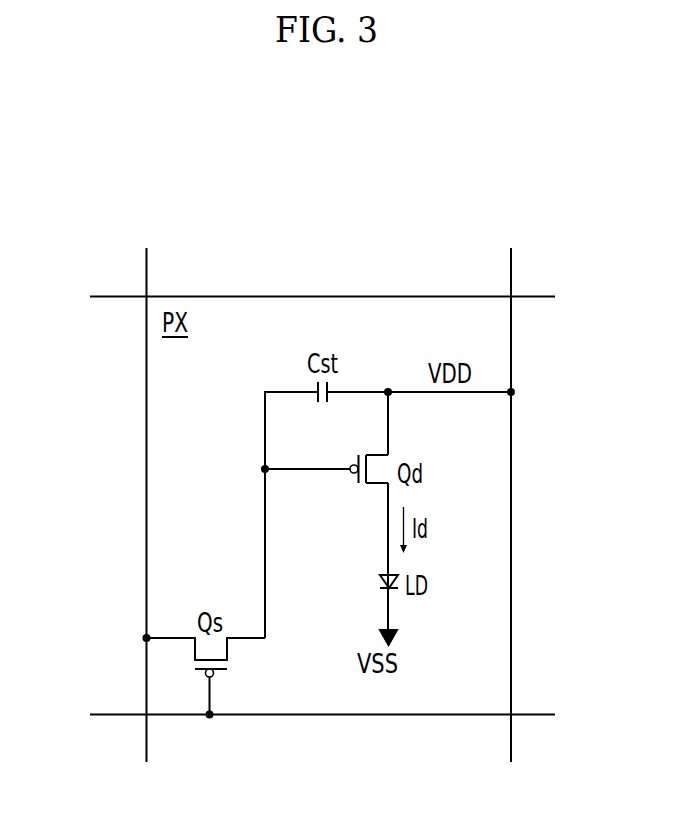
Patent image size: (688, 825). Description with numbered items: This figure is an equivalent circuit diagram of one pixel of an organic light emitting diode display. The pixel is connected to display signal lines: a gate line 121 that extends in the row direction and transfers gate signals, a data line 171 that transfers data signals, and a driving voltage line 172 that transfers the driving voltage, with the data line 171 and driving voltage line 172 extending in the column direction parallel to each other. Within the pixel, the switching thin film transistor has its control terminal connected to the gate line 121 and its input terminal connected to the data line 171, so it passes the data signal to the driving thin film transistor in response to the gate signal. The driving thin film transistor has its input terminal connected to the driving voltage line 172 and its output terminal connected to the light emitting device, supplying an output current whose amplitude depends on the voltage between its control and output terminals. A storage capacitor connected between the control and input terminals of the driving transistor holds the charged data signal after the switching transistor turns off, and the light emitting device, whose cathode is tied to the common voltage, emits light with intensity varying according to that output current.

The data line 171 is at (145, 489).
The driving voltage line 172 is at (511, 489).
The gate line 121 is at (301, 716).